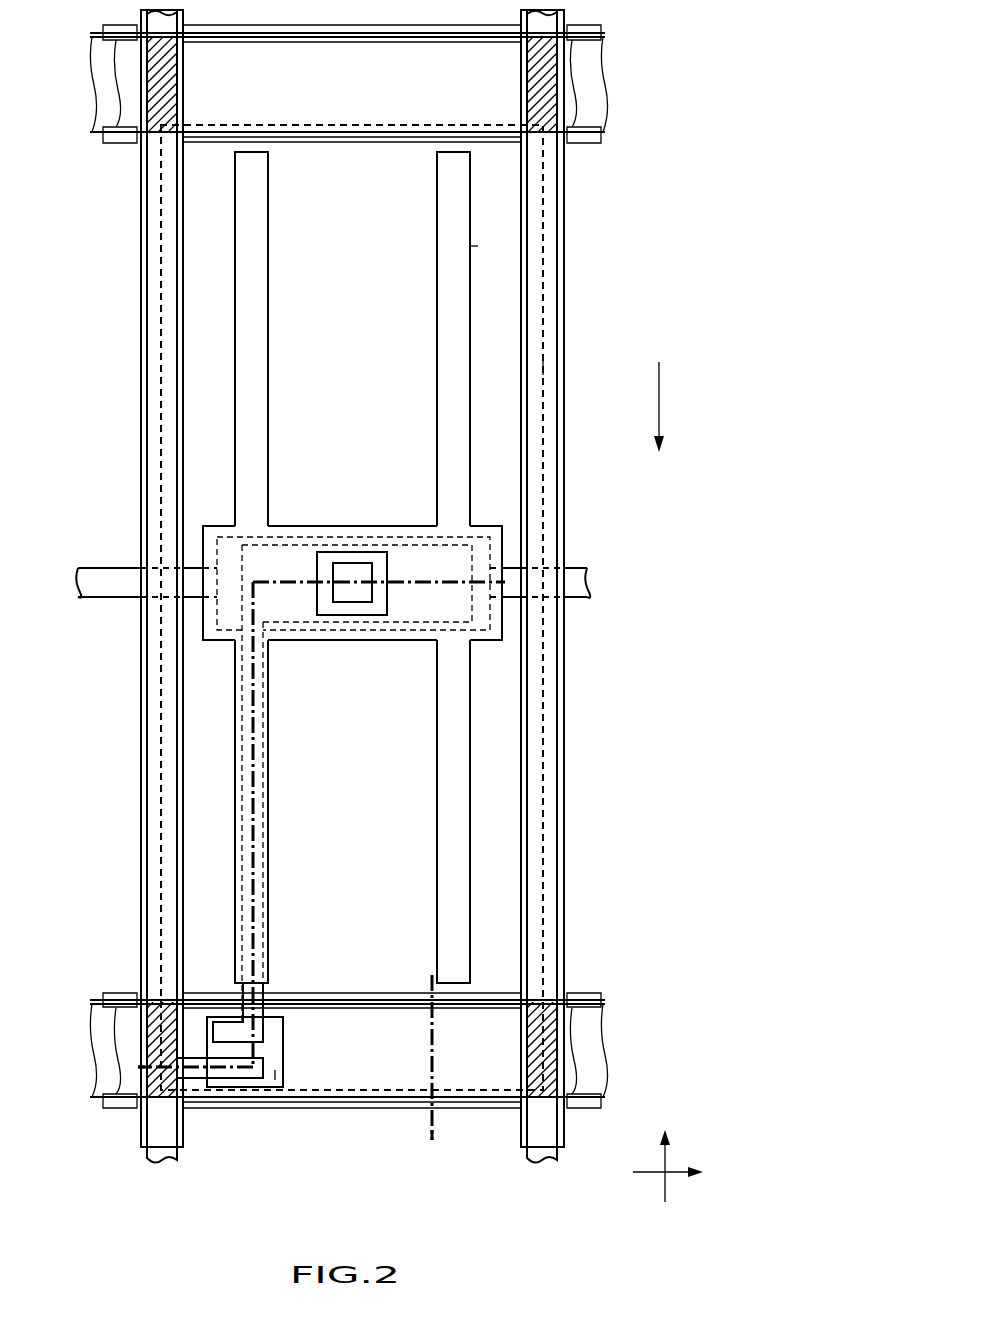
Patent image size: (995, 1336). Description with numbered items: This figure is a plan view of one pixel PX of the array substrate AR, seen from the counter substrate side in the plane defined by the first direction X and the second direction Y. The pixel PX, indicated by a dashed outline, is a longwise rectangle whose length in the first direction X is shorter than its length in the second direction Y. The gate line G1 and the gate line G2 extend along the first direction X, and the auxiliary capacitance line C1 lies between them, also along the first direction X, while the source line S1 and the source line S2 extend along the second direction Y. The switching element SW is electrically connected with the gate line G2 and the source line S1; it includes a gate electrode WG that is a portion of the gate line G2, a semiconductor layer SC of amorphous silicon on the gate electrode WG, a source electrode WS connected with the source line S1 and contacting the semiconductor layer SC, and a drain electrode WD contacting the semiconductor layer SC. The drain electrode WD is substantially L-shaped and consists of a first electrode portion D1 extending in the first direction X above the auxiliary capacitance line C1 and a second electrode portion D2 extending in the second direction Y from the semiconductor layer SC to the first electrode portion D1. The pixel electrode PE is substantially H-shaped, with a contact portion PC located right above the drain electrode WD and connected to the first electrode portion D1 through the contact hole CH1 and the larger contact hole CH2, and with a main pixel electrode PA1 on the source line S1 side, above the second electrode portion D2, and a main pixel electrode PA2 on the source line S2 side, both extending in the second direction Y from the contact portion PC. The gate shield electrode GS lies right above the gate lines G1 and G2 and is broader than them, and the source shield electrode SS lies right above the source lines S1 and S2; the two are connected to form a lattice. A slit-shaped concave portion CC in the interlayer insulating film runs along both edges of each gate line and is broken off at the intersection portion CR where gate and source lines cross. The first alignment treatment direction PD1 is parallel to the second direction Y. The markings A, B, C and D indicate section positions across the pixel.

The intersection portion CR is at (167, 69).
The gate shield electrode GS is at (323, 24).
The concave portion CC is at (416, 27).
The gate line G1 is at (603, 70).
The gate line G2 is at (605, 1038).
The array substrate AR is at (661, 141).
The pixel electrode PE is at (478, 246).
The main pixel electrode PA1 is at (268, 268).
The main pixel electrode PA2 is at (437, 268).
The pixel PX is at (545, 367).
The first alignment treatment direction PD1 is at (660, 408).
The contact hole CH1 is at (350, 563).
The contact hole CH2 is at (328, 553).
The contact portion PC is at (407, 526).
The auxiliary capacitance line C1 is at (590, 578).
The first electrode portion D1 is at (398, 623).
The second electrode portion D2 is at (265, 815).
The source shield electrode SS is at (565, 752).
The source line S1 is at (162, 1154).
The source line S2 is at (545, 1154).
The switching element SW is at (291, 1075).
The gate electrode WG is at (220, 1014).
The source electrode WS is at (218, 1076).
The semiconductor layer SC is at (278, 1078).
The drain electrode WD is at (265, 1038).
The section line end A is at (134, 1067).
The section line end B is at (329, 818).
The section line end C is at (431, 1041).
The section line end D is at (431, 1151).
The first direction X is at (678, 1173).
The second direction Y is at (665, 1153).